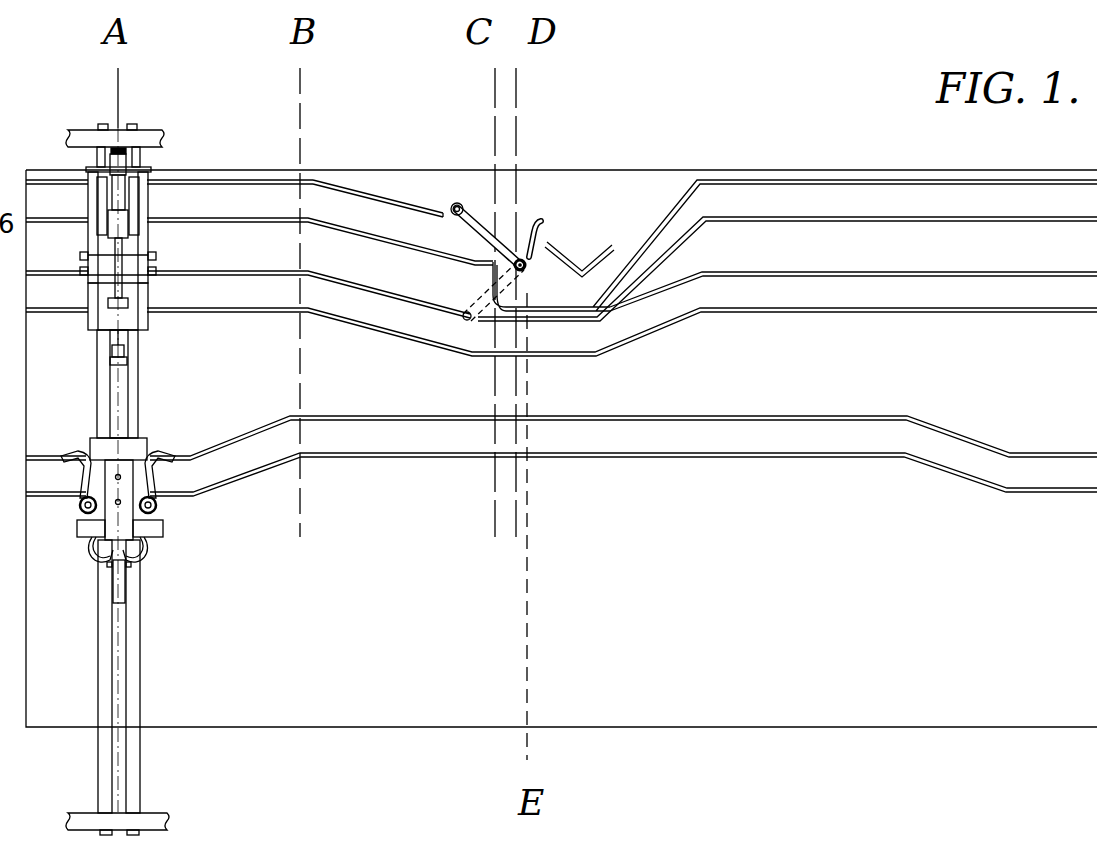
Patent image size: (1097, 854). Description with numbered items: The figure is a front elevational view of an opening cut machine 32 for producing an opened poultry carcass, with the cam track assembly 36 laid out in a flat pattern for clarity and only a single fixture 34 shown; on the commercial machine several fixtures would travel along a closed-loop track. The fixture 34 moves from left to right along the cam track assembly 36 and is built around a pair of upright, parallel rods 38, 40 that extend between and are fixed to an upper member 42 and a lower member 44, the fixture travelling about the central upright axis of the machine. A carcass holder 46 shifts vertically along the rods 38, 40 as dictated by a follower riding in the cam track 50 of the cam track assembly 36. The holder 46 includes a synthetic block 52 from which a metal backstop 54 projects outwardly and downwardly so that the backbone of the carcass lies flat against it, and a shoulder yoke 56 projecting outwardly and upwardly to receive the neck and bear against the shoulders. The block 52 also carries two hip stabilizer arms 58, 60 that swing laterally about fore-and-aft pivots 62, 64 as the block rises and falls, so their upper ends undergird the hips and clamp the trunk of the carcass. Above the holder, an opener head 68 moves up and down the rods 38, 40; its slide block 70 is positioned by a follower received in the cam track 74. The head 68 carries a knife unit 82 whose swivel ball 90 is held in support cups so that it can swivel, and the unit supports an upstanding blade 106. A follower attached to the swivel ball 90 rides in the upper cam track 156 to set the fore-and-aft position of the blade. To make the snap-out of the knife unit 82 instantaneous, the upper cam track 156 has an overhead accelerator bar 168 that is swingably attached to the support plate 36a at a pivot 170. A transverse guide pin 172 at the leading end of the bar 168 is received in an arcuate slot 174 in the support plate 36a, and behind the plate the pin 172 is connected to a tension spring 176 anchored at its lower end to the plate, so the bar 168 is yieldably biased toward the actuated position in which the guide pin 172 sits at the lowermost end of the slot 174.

The opening cut machine 32 is at (245, 762).
The fixture 34 is at (160, 105).
The cam track assembly 36 is at (553, 155).
The support plate 36a is at (375, 183).
The rod 38 is at (100, 385).
The rod 40 is at (132, 392).
The upper member 42 is at (80, 131).
The lower member 44 is at (86, 813).
The carcass holder 46 is at (158, 425).
The cam track 50 is at (358, 452).
The block 52 is at (98, 447).
The backstop 54 is at (112, 490).
The shoulder yoke 56 is at (160, 556).
The hip stabilizer arm 58 is at (84, 480).
The hip stabilizer arm 60 is at (162, 486).
The pivot 62 is at (75, 530).
The pivot 64 is at (160, 505).
The opener head 68 is at (162, 240).
The slide block 70 is at (148, 325).
The cam track 74 is at (360, 300).
The knife unit 82 is at (156, 297).
The swivel ball 90 is at (113, 215).
The blade 106 is at (98, 353).
The upper cam track 156 is at (258, 195).
The accelerator bar 168 is at (483, 232).
The pivot 170 is at (452, 204).
The guide pin 172 is at (525, 272).
The arcuate slot 174 is at (541, 223).
The tension spring 176 is at (474, 294).